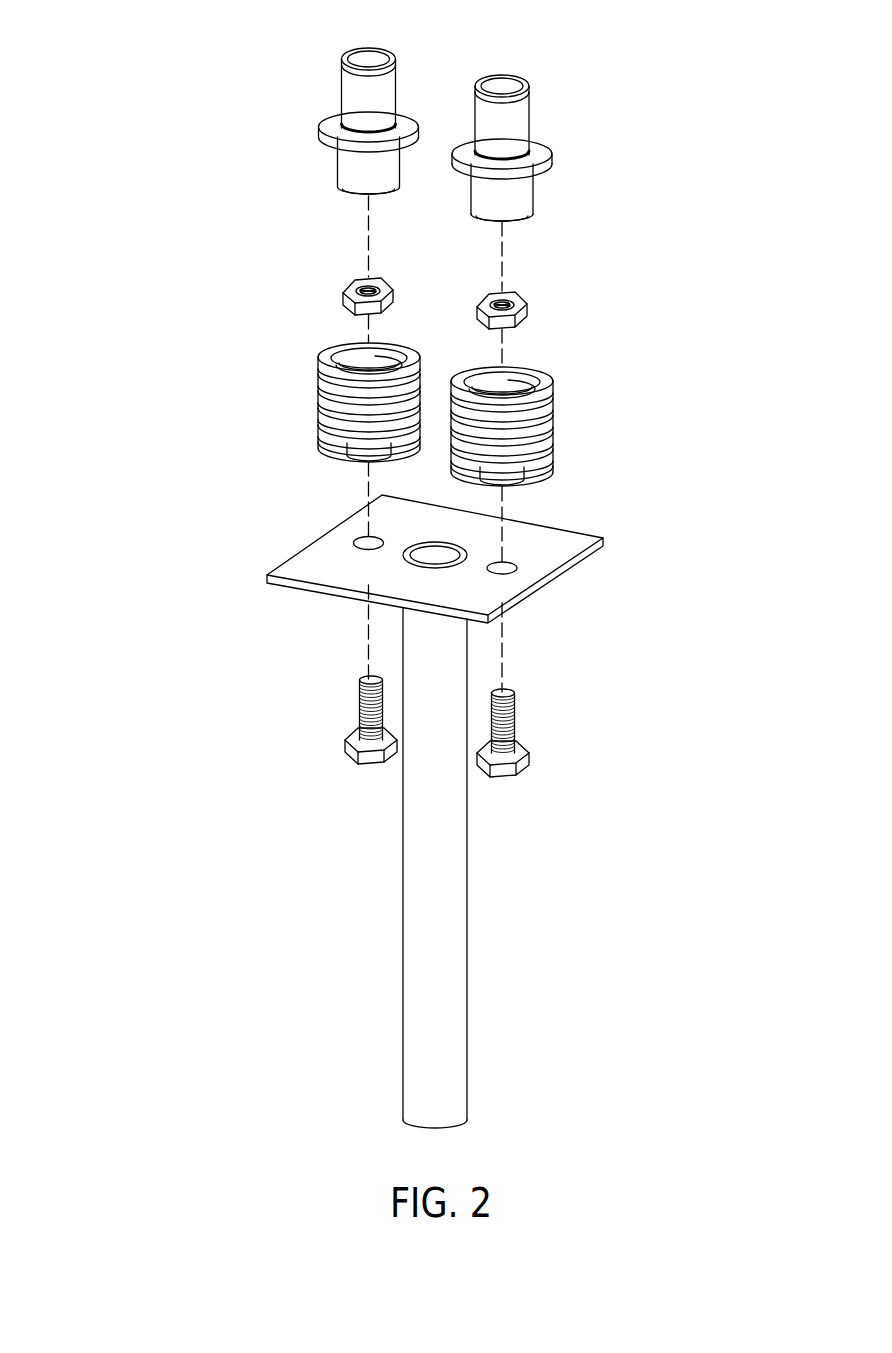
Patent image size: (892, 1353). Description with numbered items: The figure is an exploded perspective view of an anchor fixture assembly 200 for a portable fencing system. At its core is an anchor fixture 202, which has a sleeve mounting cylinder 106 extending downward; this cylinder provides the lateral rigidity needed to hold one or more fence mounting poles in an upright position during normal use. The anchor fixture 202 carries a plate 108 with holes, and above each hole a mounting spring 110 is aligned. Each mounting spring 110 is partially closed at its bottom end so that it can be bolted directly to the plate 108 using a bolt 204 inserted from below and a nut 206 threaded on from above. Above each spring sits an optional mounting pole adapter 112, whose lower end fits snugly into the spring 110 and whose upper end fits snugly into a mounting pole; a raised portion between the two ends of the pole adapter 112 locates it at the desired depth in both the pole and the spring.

The anchor fixture assembly 200 is at (178, 109).
The anchor fixture 202 is at (274, 539).
The mounting pole adapter 112 is at (355, 88).
The nut 206 is at (343, 300).
The mounting spring 110 is at (320, 400).
The plate 108 is at (568, 540).
The bolt 204 is at (345, 750).
The sleeve mounting cylinder 106 is at (455, 923).